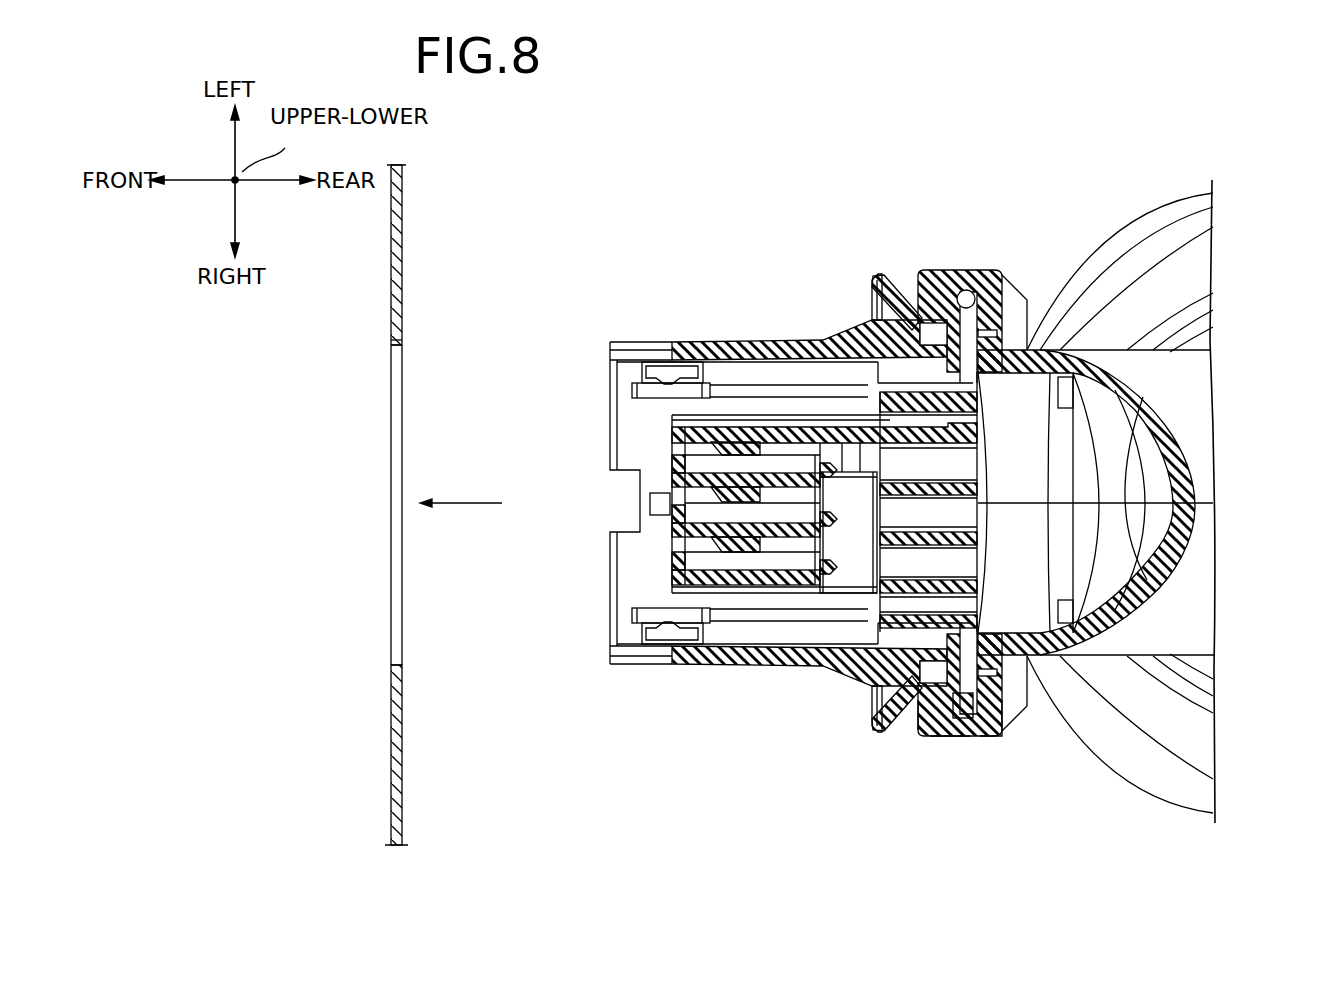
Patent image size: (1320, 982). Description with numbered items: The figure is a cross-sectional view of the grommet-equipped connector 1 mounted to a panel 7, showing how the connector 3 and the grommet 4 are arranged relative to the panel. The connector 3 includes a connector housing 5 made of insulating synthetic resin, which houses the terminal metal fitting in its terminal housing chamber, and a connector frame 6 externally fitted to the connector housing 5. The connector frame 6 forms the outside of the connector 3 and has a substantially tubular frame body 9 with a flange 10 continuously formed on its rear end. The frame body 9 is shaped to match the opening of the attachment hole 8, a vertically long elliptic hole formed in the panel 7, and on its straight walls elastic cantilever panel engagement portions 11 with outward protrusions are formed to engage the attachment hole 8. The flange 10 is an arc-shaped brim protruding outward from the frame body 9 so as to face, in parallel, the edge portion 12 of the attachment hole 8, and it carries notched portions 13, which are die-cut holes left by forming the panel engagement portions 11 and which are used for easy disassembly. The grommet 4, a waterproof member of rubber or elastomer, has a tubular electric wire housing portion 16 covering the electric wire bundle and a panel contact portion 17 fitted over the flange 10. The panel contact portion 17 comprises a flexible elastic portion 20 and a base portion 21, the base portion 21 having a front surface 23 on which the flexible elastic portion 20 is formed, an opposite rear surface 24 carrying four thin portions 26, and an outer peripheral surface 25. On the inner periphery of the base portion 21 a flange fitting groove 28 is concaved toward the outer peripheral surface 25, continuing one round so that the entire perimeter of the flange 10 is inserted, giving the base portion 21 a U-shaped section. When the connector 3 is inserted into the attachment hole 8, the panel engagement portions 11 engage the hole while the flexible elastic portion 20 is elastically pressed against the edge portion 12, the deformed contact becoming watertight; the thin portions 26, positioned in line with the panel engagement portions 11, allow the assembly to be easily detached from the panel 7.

The grommet-equipped connector 1 is at (752, 220).
The connector 3 is at (667, 342).
The grommet 4 is at (1193, 392).
The connector housing 5 is at (677, 567).
The connector frame 6 is at (620, 632).
The panel 7 is at (408, 208).
The attachment hole 8 is at (392, 353).
The frame body 9 is at (710, 665).
The flange 10 is at (967, 707).
The panel engagement portion 11 is at (852, 322).
The edge portion 12 is at (403, 333).
The notched portion 13 is at (1001, 348).
The electric wire housing portion 16 is at (1197, 577).
The panel contact portion 17 is at (935, 165).
The flexible elastic portion 20 is at (897, 280).
The base portion 21 is at (953, 268).
The front surface 23 is at (915, 720).
The rear surface 24 is at (1003, 725).
The outer peripheral surface 25 is at (948, 740).
The thin portion 26 is at (1027, 300).
The flange fitting groove 28 is at (957, 326).